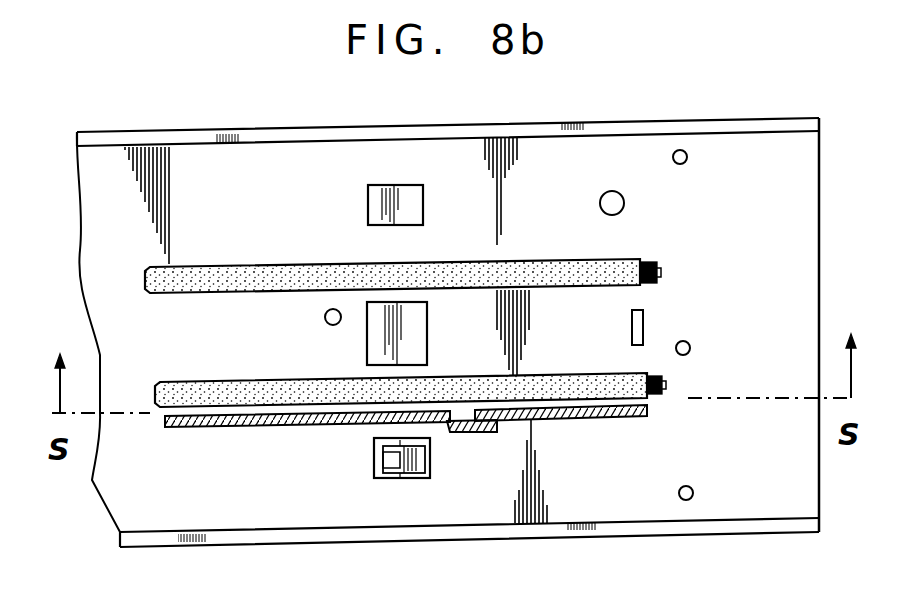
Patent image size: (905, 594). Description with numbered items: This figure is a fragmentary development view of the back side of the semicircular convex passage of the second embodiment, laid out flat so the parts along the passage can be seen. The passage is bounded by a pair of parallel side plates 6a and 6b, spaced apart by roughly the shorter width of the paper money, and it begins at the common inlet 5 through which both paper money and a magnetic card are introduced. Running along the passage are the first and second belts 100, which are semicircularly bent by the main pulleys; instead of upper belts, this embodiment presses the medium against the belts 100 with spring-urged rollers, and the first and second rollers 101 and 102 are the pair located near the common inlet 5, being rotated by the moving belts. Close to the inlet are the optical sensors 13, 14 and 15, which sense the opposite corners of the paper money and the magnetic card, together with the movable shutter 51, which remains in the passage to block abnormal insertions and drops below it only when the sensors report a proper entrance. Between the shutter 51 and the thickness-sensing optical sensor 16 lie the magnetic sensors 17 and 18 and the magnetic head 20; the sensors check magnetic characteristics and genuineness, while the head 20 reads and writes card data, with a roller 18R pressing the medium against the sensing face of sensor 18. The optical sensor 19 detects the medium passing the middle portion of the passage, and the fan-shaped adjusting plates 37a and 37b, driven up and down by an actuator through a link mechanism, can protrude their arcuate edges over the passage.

The common inlet 5 is at (788, 275).
The side plate 6a is at (254, 131).
The side plate 6b is at (322, 535).
The sensor 13 is at (718, 145).
The sensor 14 is at (688, 341).
The sensor 15 is at (718, 467).
The optical sensor 16 is at (602, 205).
The magnetic sensor 17 is at (423, 203).
The magnetic sensor 18 is at (430, 447).
The roller 18R is at (383, 460).
The optical sensor 19 is at (325, 318).
The magnetic head 20 is at (427, 322).
The adjusting plate 37a is at (556, 420).
The adjusting plate 37b is at (226, 429).
The movable shutter 51 is at (632, 321).
The belt 100 is at (250, 276).
The first roller 101 is at (660, 266).
The second roller 102 is at (666, 383).